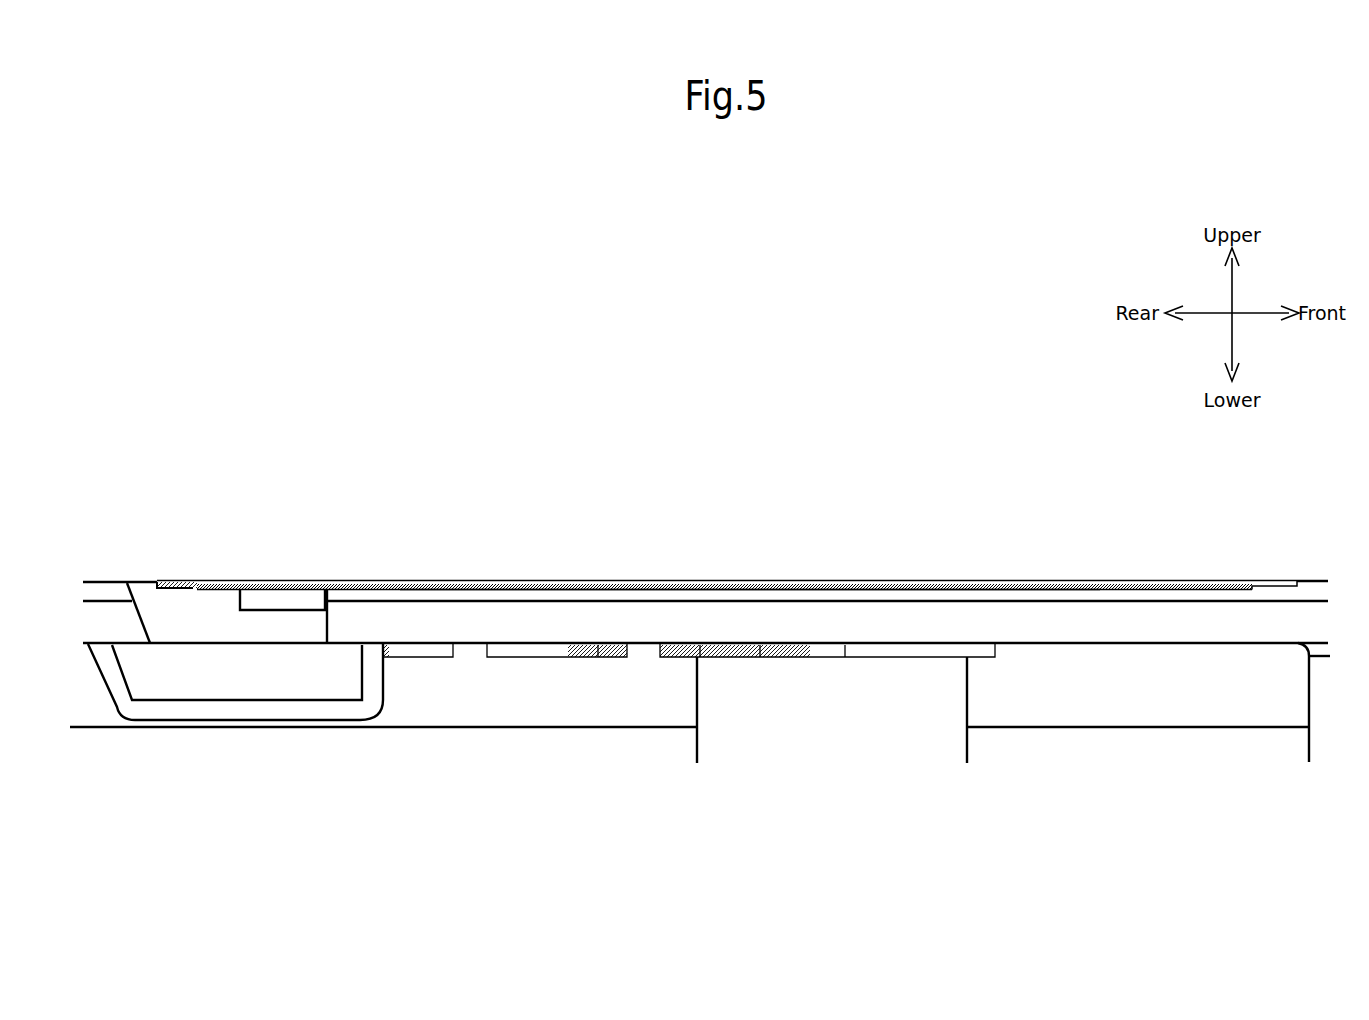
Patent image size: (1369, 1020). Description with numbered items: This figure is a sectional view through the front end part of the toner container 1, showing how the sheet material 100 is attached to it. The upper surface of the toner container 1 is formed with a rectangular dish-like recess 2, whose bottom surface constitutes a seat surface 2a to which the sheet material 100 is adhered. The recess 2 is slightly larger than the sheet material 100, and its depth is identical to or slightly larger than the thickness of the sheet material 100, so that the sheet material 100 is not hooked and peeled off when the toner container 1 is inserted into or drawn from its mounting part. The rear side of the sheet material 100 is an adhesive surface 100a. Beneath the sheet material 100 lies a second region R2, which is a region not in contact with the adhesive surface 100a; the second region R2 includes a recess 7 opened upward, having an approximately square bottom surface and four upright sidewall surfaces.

The toner container 1 is at (105, 530).
The recess 2 is at (173, 575).
The seat surface 2a is at (185, 589).
The recess 7 is at (275, 598).
The second region R2 is at (301, 588).
The sheet material 100 is at (707, 580).
The adhesive surface 100a is at (755, 590).